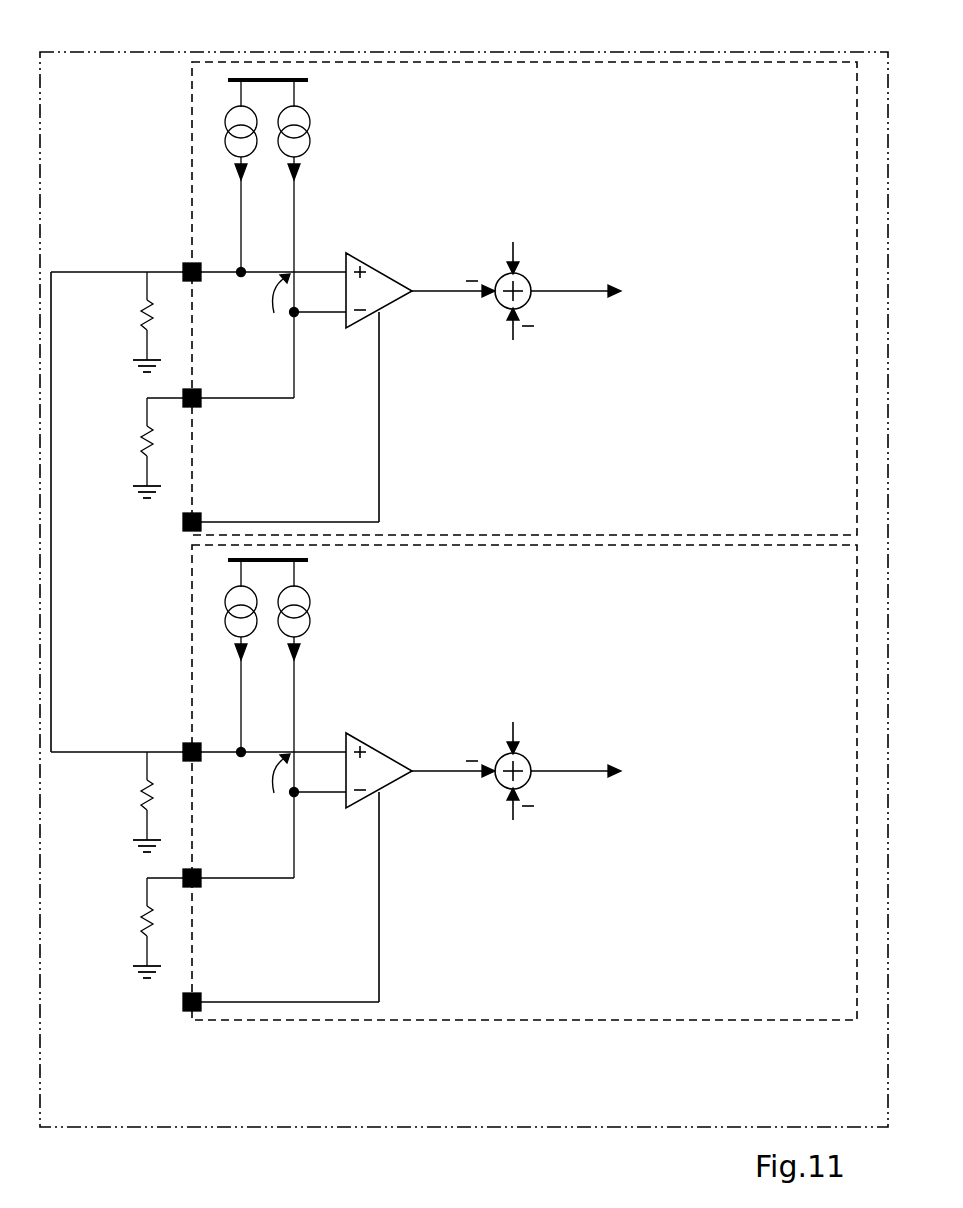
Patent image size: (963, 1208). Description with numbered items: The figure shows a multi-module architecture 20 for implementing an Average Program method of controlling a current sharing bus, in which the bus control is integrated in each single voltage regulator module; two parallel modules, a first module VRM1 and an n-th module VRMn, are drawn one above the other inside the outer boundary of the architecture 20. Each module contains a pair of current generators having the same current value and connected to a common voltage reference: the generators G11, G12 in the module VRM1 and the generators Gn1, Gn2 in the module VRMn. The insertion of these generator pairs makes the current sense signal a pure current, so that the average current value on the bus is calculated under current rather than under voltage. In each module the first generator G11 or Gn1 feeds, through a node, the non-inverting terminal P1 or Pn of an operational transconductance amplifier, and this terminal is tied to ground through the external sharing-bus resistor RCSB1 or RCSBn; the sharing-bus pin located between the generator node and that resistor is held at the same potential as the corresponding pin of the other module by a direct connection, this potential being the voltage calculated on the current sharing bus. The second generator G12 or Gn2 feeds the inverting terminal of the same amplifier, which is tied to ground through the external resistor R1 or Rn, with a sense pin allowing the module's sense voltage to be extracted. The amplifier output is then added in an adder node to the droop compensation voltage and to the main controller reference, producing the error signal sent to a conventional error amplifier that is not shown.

The multi-module architecture 20 is at (146, 48).
The first voltage regulator module VRM1 is at (454, 306).
The n-th voltage regulator module VRMn is at (454, 788).
The first current generator of module VRM1 G11 is at (223, 130).
The second current generator of module VRM1 G12 is at (308, 130).
The first current generator of module VRMn Gn1 is at (229, 610).
The second current generator of module VRMn Gn2 is at (313, 610).
The external resistor R_CSB of module VRM1 RCSB1 is at (129, 322).
The external resistor R_CSB of module VRMn RCSBn is at (129, 802).
The external resistor R_i of module VRM1 R1 is at (137, 448).
The external resistor R_i of module VRMn Rn is at (133, 928).
The non-inverting terminal of the operational transconductance amplifier of VRM1 P1 is at (379, 296).
The non-inverting terminal of the operational transconductance amplifier of VRMn Pn is at (379, 776).